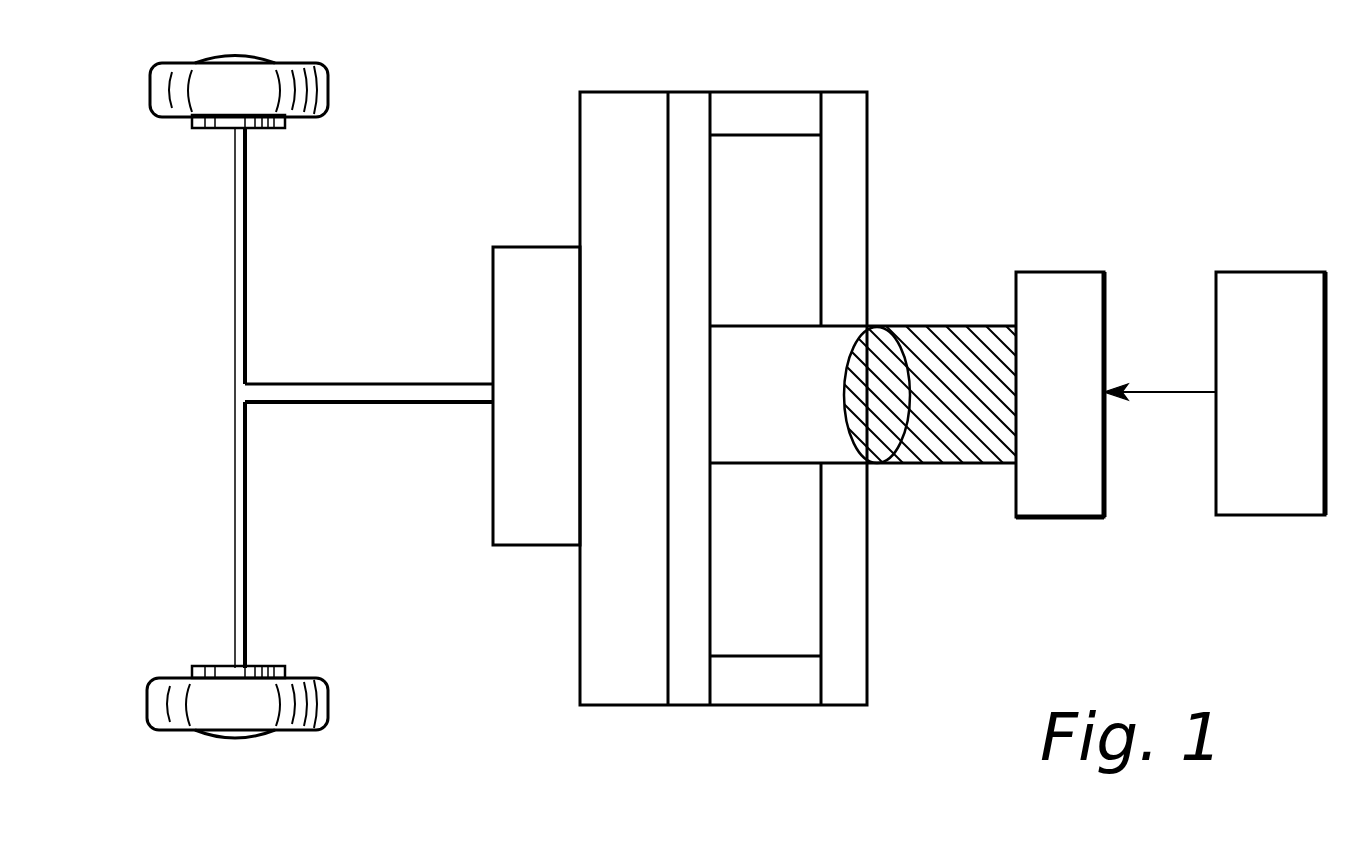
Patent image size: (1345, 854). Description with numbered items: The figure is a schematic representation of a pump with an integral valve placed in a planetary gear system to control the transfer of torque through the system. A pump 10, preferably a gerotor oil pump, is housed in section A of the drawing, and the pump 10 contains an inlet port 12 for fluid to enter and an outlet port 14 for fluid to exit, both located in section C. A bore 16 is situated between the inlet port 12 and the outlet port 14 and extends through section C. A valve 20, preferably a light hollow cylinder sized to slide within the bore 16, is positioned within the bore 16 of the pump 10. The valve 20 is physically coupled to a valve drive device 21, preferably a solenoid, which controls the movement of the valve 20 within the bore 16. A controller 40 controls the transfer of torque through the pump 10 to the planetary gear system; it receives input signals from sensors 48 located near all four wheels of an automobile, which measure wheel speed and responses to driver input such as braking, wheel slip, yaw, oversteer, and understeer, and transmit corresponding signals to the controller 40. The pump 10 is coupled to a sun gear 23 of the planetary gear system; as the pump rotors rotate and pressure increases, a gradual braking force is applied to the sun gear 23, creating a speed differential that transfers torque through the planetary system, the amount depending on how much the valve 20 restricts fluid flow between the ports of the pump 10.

The pump 10 is at (610, 108).
The inlet port 12 is at (793, 95).
The outlet port 14 is at (775, 693).
The bore 16 is at (790, 402).
The valve 20 is at (950, 328).
The valve drive device 21 is at (1067, 275).
The sun gear 23 is at (515, 250).
The controller 40 is at (1267, 280).
The sensors 48 is at (285, 126).